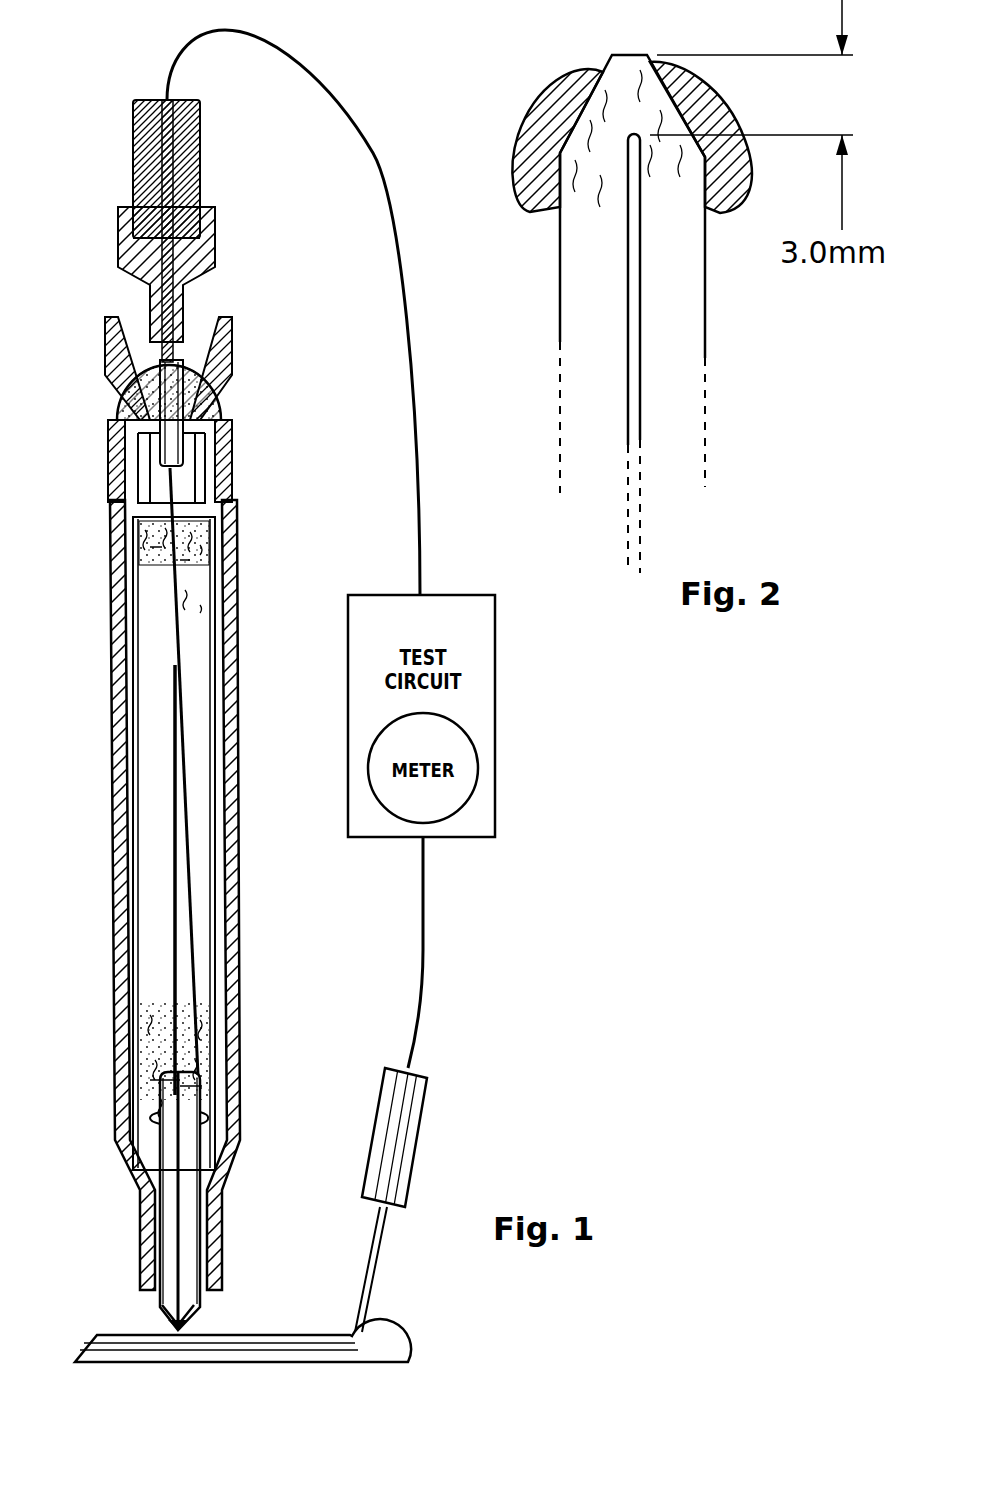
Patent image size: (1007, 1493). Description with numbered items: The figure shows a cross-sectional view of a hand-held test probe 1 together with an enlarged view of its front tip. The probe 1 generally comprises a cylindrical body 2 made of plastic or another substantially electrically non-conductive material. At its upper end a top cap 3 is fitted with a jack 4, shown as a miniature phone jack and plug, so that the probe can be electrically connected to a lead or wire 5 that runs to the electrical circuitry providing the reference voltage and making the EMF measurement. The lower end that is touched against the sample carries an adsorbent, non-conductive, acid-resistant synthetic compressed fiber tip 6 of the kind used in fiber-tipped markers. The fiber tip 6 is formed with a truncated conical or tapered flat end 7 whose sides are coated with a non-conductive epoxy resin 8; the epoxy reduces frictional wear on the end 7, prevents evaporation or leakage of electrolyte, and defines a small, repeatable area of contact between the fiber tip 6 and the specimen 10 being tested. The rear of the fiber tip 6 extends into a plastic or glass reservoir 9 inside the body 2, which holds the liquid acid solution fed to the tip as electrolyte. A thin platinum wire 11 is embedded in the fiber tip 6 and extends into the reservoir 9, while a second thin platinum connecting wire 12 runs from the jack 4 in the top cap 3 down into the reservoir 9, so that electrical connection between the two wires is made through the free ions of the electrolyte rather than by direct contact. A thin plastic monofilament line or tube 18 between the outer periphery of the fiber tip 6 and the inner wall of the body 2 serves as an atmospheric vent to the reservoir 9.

In FIG. 1, the probe 1 is at (240, 932).
In FIG. 1, the cylindrical body 2 is at (115, 590).
In FIG. 1, the top cap 3 is at (115, 378).
In FIG. 1, the jack 4 is at (202, 155).
In FIG. 1, the lead or wire 5 is at (285, 42).
In FIG. 1, the fiber tip 6 is at (188, 1162).
In FIG. 2, the fiber tip 6 is at (633, 301).
In FIG. 1, the tapered flat end 7 is at (170, 1327).
In FIG. 2, the tapered flat end 7 is at (603, 163).
In FIG. 1, the epoxy resin 8 is at (192, 1327).
In FIG. 2, the epoxy resin 8 is at (552, 112).
In FIG. 1, the reservoir 9 is at (198, 565).
In FIG. 1, the specimen 10 is at (297, 1335).
In FIG. 1, the platinum wire 11 is at (170, 900).
In FIG. 2, the platinum wire 11 is at (640, 288).
In FIG. 1, the connecting wire 12 is at (190, 800).
In FIG. 1, the monofilament line or tube 18 is at (157, 1290).